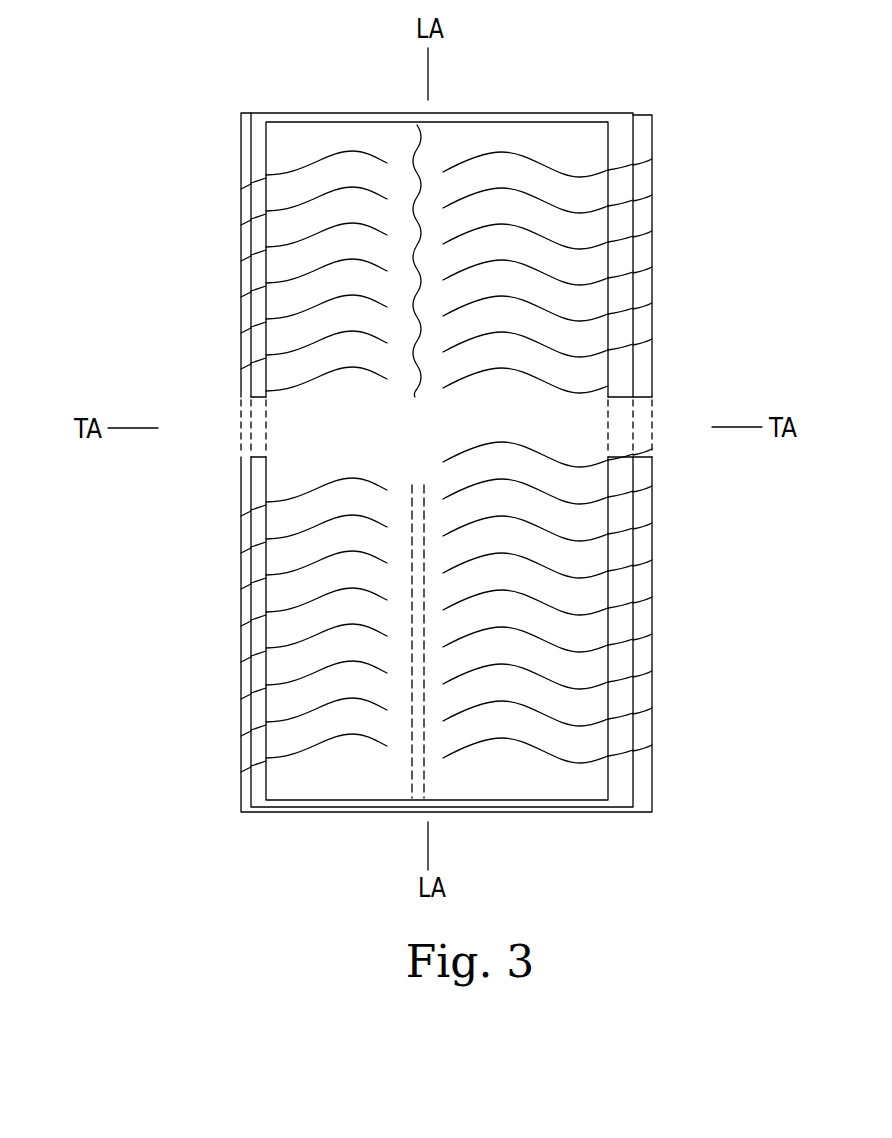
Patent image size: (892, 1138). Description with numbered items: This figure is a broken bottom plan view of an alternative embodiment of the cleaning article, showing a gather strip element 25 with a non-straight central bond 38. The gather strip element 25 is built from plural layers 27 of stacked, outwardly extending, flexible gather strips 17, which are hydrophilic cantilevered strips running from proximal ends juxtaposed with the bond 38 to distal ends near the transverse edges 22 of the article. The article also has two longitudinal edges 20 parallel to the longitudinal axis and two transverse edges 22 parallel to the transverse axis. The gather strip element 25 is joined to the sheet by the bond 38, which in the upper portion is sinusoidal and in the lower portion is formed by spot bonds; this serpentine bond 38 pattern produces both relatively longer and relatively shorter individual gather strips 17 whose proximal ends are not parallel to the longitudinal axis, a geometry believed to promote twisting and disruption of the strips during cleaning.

The gather strips 17 is at (278, 265).
The longitudinal edges 20 is at (238, 345).
The transverse edges 22 is at (528, 112).
The gather strip element 25 is at (212, 576).
The layers 27 is at (620, 556).
The bond 38 is at (407, 140).